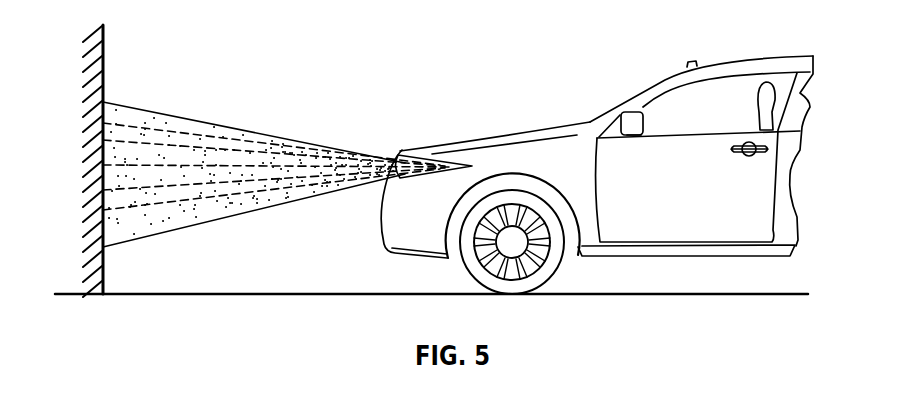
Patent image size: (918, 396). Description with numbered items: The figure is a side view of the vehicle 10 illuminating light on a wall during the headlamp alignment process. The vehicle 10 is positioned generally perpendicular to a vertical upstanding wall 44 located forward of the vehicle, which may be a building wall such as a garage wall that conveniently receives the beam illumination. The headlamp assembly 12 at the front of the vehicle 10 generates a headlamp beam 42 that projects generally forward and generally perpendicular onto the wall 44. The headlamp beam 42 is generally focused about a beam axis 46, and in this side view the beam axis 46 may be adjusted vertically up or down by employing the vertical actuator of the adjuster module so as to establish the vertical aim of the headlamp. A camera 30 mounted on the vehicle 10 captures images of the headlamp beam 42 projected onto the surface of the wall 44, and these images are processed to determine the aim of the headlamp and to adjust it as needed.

The vehicle 10 is at (560, 78).
The headlamp assembly 12 is at (404, 186).
The camera 30 is at (692, 62).
The headlamp beam 42 is at (146, 217).
The wall 44 is at (103, 65).
The beam axis 46 is at (229, 165).